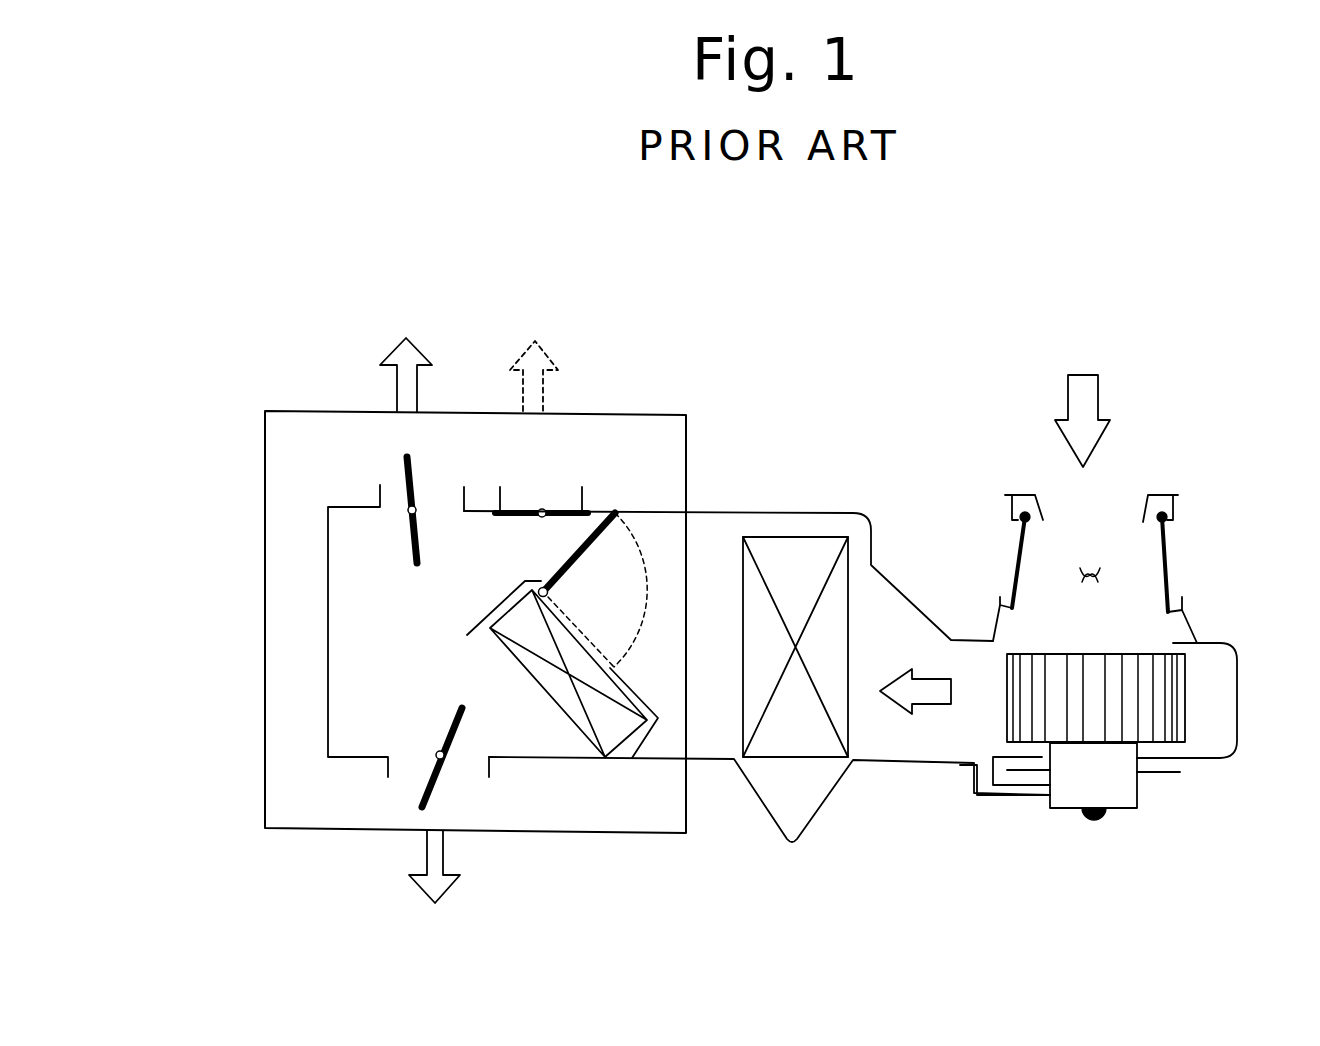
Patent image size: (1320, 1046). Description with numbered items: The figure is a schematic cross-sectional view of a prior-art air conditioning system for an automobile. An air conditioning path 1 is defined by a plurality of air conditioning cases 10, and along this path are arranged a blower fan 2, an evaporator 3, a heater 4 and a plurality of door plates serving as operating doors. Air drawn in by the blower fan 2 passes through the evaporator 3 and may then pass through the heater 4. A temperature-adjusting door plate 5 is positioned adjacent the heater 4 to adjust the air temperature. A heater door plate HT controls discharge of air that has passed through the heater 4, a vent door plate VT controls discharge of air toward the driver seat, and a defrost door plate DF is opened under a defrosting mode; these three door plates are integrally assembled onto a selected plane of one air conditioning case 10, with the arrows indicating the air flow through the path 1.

The air conditioning path 1 is at (868, 515).
The blower fan 2 is at (1167, 705).
The evaporator 3 is at (776, 745).
The heater 4 is at (605, 722).
The temperature-adjusting door plate 5 is at (608, 511).
The air conditioning case 10 is at (276, 757).